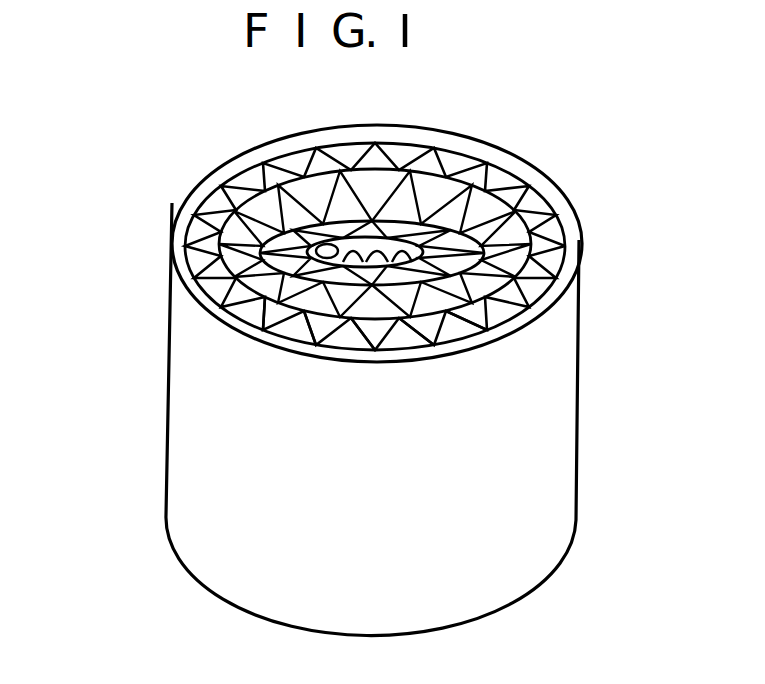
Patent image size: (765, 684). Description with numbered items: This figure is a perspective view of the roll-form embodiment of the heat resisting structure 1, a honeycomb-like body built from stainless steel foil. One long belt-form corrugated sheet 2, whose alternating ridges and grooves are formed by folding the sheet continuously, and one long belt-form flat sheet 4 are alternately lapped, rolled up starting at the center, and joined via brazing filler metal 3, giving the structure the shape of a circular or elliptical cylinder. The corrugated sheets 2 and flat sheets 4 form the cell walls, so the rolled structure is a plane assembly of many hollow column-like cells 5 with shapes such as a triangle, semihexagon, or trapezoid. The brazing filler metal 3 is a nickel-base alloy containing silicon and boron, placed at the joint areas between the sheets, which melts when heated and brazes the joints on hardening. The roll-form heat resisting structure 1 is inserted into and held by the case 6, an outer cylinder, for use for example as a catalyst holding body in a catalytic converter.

The heat resisting structure 1 is at (645, 87).
The corrugated sheet 2 is at (215, 216).
The brazing filler metal 3 is at (265, 322).
The flat sheet 4 is at (187, 267).
The cells 5 is at (265, 172).
The case 6 is at (178, 512).